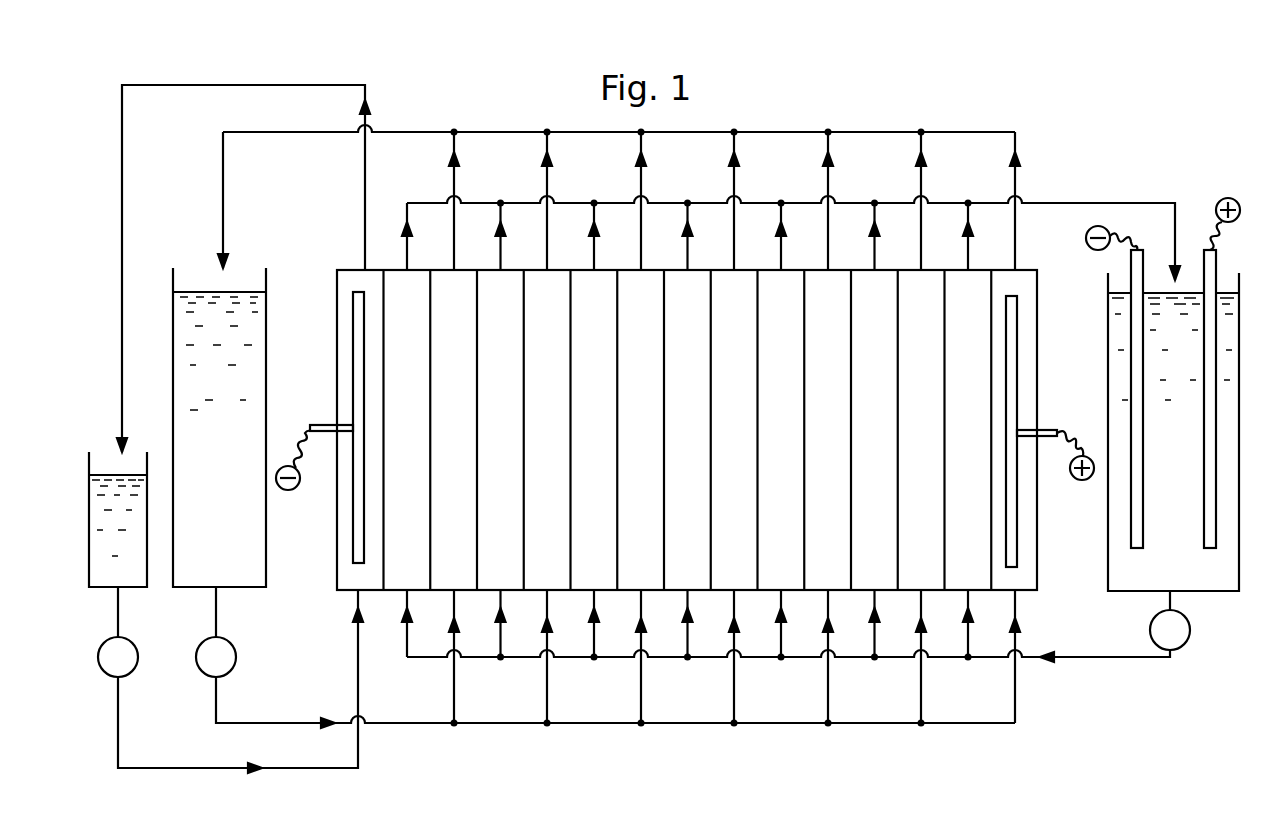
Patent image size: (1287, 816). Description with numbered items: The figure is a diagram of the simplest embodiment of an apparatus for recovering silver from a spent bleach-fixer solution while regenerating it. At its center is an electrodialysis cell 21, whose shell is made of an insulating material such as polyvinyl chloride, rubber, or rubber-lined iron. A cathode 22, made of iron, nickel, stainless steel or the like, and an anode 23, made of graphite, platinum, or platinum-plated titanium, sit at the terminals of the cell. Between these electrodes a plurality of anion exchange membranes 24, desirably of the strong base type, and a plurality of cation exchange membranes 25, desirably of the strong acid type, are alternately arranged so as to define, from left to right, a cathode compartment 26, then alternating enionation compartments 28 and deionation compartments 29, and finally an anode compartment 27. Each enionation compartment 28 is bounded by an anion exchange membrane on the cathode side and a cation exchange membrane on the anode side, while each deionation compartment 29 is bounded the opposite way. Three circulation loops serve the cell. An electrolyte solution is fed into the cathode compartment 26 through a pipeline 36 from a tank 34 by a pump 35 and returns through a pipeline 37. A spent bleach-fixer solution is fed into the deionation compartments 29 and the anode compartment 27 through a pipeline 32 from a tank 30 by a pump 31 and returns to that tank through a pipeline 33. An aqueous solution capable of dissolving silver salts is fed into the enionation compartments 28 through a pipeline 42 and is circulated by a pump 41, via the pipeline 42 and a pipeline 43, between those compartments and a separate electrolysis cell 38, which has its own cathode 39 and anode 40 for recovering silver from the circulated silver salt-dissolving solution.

The electrodialysis cell 21 is at (1037, 530).
The cathode 22 is at (353, 349).
The anode 23 is at (1017, 350).
The anion exchange membrane 24 is at (955, 354).
The cation exchange membrane 25 is at (1045, 279).
The cathode compartment 26 is at (345, 574).
The anode compartment 27 is at (1013, 578).
The enionation compartment 28 is at (982, 475).
The deionation compartment 29 is at (936, 431).
The tank 30 is at (173, 339).
The pump 31 is at (206, 637).
The pipeline 32 is at (300, 723).
The pipeline 33 is at (312, 132).
The tank 34 is at (149, 475).
The pump 35 is at (117, 637).
The pipeline 36 is at (197, 768).
The pipeline 37 is at (243, 85).
The electrolysis cell 38 is at (1225, 596).
The cathode 39 is at (1143, 371).
The anode 40 is at (1204, 470).
The pump 41 is at (1178, 647).
The pipeline 42 is at (1087, 660).
The pipeline 43 is at (1083, 203).